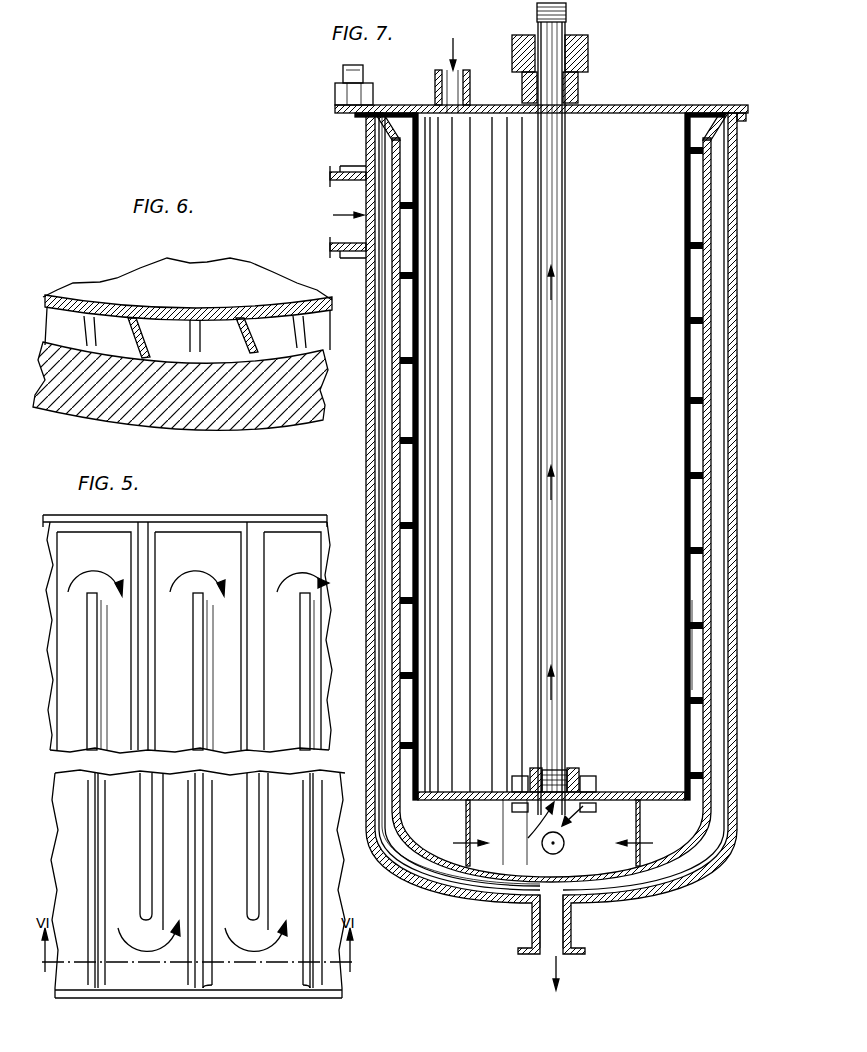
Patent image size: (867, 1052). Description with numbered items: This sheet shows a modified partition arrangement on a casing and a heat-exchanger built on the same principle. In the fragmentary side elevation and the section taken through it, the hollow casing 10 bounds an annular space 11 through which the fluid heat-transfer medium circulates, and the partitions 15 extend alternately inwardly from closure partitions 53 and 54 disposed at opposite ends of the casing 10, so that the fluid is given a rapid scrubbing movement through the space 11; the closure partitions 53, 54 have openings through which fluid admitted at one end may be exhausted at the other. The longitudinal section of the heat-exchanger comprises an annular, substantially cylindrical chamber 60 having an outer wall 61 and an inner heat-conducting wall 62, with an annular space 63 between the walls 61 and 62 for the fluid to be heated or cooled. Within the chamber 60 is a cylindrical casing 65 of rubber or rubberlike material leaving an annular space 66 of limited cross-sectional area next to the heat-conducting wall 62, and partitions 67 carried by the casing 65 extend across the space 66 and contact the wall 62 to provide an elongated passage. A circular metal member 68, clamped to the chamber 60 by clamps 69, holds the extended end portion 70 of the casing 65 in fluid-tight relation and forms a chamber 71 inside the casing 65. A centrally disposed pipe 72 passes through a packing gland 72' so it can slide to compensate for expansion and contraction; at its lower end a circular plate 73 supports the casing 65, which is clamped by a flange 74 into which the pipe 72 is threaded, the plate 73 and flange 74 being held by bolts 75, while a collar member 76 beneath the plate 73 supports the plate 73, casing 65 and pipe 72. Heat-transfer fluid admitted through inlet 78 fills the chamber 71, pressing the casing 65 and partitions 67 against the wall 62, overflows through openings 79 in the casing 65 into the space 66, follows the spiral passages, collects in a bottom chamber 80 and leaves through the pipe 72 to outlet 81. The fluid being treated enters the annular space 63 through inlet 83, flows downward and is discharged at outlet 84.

In FIG. 6, the casing 10 is at (230, 312).
In FIG. 5, the casing 10 is at (272, 977).
In FIG. 6, the annular space 11 is at (177, 337).
In FIG. 6, the partition 15 is at (127, 302).
In FIG. 5, the partition 15 is at (90, 672).
In FIG. 5, the closure partition 53 is at (192, 992).
In FIG. 5, the closure partition 54 is at (200, 517).
In FIG. 7, the chamber 60 is at (650, 265).
In FIG. 7, the outer wall 61 is at (733, 346).
In FIG. 7, the inner heat-conducting wall 62 is at (714, 419).
In FIG. 7, the annular space 63 is at (717, 496).
In FIG. 7, the casing 65 is at (690, 582).
In FIG. 7, the annular space 66 is at (698, 663).
In FIG. 7, the partitions 67 is at (703, 774).
In FIG. 7, the circular metal member 68 is at (673, 104).
In FIG. 7, the clamps 69 is at (343, 75).
In FIG. 7, the extended end portion 70 is at (738, 128).
In FIG. 7, the chamber 71 is at (531, 454).
In FIG. 7, the pipe 72 is at (575, 418).
In FIG. 7, the packing gland 72' is at (580, 69).
In FIG. 7, the circular plate 73 is at (623, 793).
In FIG. 7, the flange 74 is at (572, 782).
In FIG. 7, the bolts 75 is at (520, 776).
In FIG. 7, the collar member 76 is at (640, 819).
In FIG. 7, the inlet 78 is at (442, 75).
In FIG. 7, the openings 79 is at (419, 139).
In FIG. 7, the bottom chamber 80 is at (553, 831).
In FIG. 7, the outlet 81 is at (566, 4).
In FIG. 7, the inlet 83 is at (345, 200).
In FIG. 7, the outlet 84 is at (560, 940).